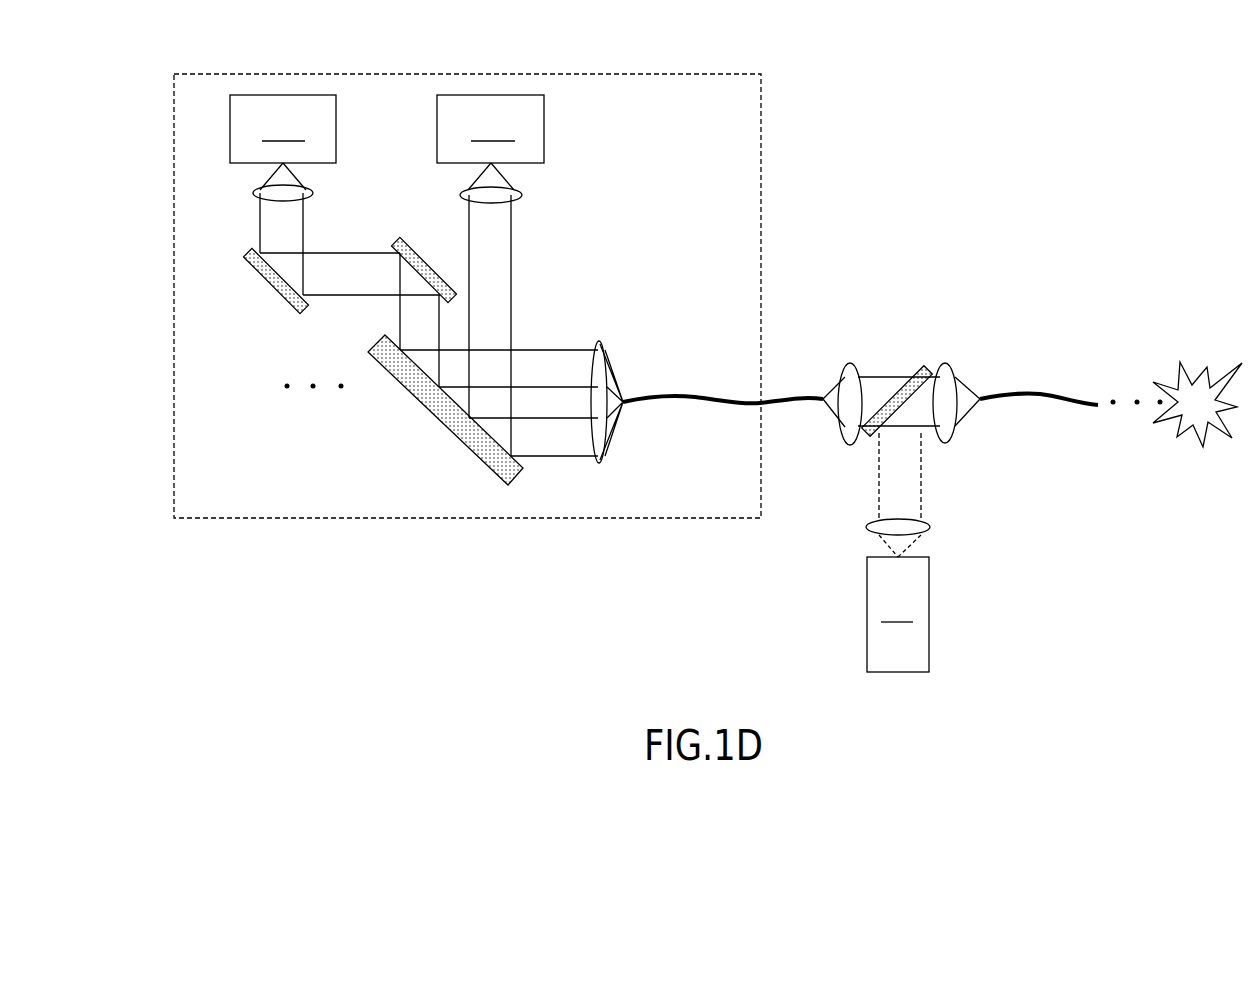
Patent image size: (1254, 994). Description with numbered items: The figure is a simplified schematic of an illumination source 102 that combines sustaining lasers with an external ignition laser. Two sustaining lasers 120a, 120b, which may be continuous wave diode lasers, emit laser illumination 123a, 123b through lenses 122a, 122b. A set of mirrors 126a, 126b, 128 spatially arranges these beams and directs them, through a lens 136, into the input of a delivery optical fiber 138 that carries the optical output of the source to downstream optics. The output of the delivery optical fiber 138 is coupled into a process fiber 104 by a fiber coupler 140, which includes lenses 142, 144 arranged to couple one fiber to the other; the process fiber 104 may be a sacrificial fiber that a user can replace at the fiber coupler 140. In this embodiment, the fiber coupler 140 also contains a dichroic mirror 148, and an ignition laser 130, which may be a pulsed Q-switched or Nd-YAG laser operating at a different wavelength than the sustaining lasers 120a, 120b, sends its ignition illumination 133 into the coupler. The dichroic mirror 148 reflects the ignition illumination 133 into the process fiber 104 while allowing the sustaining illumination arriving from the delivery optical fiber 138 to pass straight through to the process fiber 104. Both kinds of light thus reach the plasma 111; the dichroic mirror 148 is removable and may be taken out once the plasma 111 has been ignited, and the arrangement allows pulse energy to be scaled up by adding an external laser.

The illumination source 102 is at (204, 34).
The sustaining laser 120a is at (283, 129).
The sustaining laser 120b is at (490, 129).
The lens 122a is at (258, 190).
The lens 122b is at (519, 192).
The laser illumination 123a is at (273, 226).
The sustaining illumination 123b is at (481, 232).
The mirror 126a is at (271, 283).
The mirror 126b is at (399, 244).
The mirror 128 is at (433, 418).
The lens 136 is at (604, 462).
The delivery optical fiber 138 is at (692, 395).
The fiber coupler 140 is at (901, 359).
The lens 142 is at (849, 365).
The lens 144 is at (946, 364).
The dichroic mirror 148 is at (891, 400).
The ignition illumination 133 is at (912, 488).
The ignition laser 130 is at (898, 614).
The process fiber 104 is at (1043, 393).
The plasma 111 is at (1197, 420).